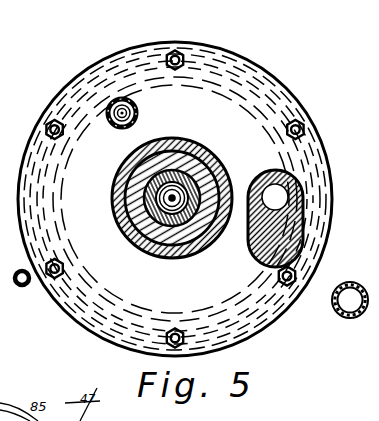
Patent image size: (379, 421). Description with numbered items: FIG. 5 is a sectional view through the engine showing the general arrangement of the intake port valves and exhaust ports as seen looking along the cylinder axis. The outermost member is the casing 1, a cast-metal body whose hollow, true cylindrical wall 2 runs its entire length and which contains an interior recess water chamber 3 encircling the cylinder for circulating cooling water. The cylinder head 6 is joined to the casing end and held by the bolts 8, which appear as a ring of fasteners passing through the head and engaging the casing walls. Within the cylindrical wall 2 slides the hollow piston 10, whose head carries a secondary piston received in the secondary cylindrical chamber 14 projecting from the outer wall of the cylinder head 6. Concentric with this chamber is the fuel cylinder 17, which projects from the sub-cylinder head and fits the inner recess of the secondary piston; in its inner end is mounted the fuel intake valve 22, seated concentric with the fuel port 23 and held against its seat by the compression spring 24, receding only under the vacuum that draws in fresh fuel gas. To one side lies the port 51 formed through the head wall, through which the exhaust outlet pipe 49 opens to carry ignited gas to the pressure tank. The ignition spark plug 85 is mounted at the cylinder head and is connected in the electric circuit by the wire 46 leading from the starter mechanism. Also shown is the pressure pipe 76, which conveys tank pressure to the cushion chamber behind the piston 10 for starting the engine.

The casing 1 is at (308, 128).
The cylindrical wall 2 is at (270, 113).
The recess water chamber 3 is at (258, 89).
The cylinder head 6 is at (329, 162).
The bolts 8 is at (297, 120).
The piston 10 is at (69, 251).
The secondary cylindrical chamber 14 is at (198, 143).
The fuel cylinder 17 is at (218, 158).
The fuel intake valve 22 is at (153, 194).
The fuel port 23 is at (144, 215).
The compression spring 24 is at (121, 180).
The wire 46 is at (99, 77).
The exhaust outlet pipe 49 is at (352, 282).
The port 51 is at (279, 196).
The pressure pipe 76 is at (28, 289).
The ignition spark plug 85 is at (122, 98).